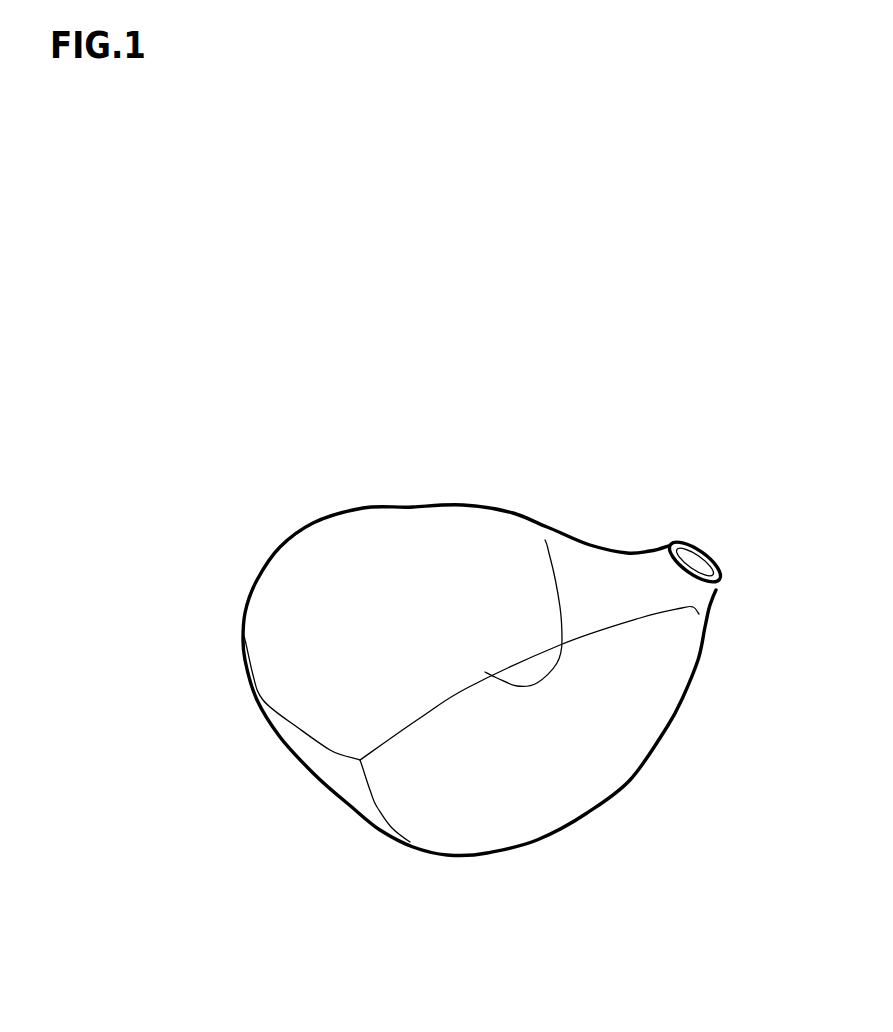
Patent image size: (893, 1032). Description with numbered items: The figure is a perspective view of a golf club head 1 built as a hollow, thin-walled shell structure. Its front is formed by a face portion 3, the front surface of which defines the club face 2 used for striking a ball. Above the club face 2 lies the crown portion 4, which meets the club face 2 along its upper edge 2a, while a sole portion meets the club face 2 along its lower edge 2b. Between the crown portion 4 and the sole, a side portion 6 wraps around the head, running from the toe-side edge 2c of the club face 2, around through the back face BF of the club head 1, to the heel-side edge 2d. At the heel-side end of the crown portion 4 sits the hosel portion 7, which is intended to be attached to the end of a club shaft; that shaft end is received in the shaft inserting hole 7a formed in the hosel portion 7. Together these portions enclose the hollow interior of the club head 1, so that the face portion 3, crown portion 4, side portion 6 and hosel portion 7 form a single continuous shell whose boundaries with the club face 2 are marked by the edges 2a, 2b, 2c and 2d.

The golf club head 1 is at (290, 445).
The back face BF is at (258, 542).
The club face 2 is at (607, 705).
The upper edge 2a is at (545, 540).
The lower edge 2b is at (535, 842).
The toe-side edge 2c is at (372, 812).
The heel-side edge 2d is at (697, 662).
The face portion 3 is at (482, 817).
The crown portion 4 is at (415, 560).
The side portion 6 is at (327, 767).
The hosel portion 7 is at (670, 540).
The shaft inserting hole 7a is at (697, 573).